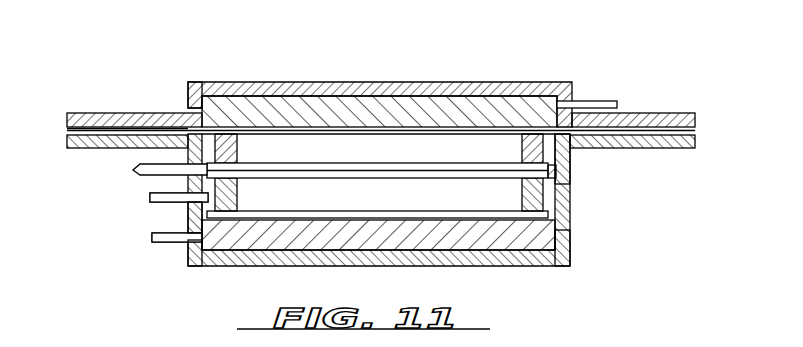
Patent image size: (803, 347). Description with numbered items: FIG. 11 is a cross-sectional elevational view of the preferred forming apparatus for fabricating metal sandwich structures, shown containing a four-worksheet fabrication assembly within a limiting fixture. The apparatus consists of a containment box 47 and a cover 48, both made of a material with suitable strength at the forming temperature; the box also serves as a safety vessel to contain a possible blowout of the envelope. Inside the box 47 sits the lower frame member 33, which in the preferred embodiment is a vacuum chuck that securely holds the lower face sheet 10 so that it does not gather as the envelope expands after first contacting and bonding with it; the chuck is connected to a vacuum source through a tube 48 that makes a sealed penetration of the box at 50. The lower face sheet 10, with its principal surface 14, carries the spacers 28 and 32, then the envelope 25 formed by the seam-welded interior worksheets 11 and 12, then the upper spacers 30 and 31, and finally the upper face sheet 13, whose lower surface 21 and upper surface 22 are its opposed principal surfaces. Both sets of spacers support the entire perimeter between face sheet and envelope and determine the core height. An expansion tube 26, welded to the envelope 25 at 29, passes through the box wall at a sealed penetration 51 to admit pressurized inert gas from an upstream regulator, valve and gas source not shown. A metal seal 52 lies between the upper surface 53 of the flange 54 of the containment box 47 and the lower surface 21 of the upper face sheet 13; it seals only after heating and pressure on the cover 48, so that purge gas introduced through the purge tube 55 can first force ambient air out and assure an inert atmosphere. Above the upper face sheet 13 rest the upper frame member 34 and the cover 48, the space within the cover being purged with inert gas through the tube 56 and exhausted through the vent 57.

The lower face sheet 10 is at (570, 217).
The lower interior worksheet 11 is at (572, 183).
The upper interior worksheet 12 is at (572, 165).
The upper face sheet 13 is at (640, 114).
The principal surface of lower face sheet 14 is at (475, 223).
The lower surface of upper face sheet 21 is at (334, 136).
The upper surface of upper face sheet 22 is at (390, 126).
The envelope 25 is at (374, 158).
The expansion tube 26 is at (133, 172).
The lower spacer 28 is at (237, 204).
The weld of expansion tube to envelope 29 is at (156, 202).
The upper spacer 30 is at (238, 151).
The upper spacer 31 is at (522, 150).
The lower spacer 32 is at (522, 198).
The lower frame member 33 is at (532, 240).
The upper frame member 34 is at (510, 102).
The containment box 47 is at (572, 243).
The cover 48 is at (462, 93).
The sealed penetration of vacuum tube 50 is at (186, 253).
The sealed penetration of expansion tube 51 is at (185, 155).
The metal seal 52 is at (182, 130).
The upper surface of flange 53 is at (68, 137).
The flange 54 is at (80, 149).
The purge tube 55 is at (160, 207).
The cover purge tube 56 is at (600, 101).
The vent 57 is at (188, 108).